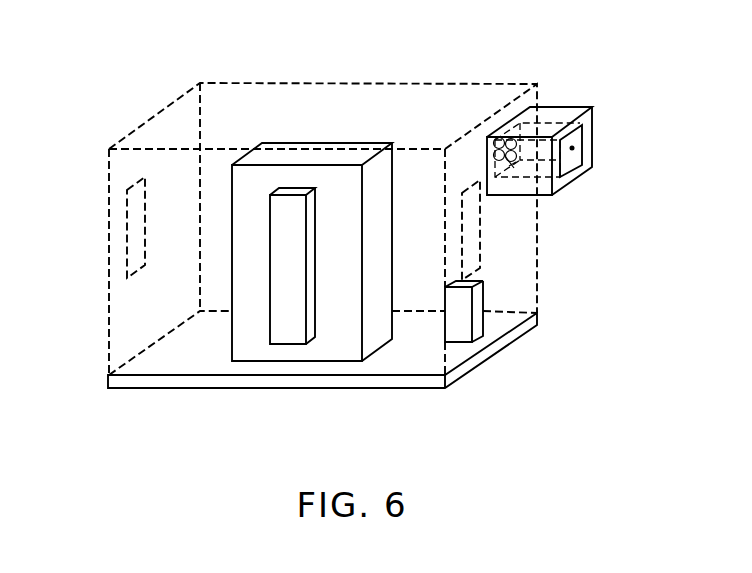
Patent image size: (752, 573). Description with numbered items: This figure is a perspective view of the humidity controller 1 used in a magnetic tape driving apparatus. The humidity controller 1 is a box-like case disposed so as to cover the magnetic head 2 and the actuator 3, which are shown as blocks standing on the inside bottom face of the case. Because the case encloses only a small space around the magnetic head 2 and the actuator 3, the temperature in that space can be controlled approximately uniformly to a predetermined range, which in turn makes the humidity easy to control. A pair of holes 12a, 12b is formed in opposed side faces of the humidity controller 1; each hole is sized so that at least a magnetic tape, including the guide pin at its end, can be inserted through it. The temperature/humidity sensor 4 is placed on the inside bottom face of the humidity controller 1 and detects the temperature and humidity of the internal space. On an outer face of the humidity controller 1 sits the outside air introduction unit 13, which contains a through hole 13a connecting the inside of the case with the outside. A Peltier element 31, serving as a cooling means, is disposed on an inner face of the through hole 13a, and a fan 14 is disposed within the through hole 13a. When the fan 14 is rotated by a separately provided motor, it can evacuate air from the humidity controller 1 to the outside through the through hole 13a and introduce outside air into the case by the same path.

The humidity controller 1 is at (445, 84).
The magnetic head 2 is at (286, 337).
The actuator 3 is at (342, 348).
The temperature/humidity sensor 4 is at (478, 323).
The hole 12a is at (127, 243).
The hole 12b is at (482, 247).
The outside air introduction unit 13 is at (560, 107).
The through hole 13a is at (575, 149).
The fan 14 is at (513, 177).
The Peltier element 31 is at (583, 137).